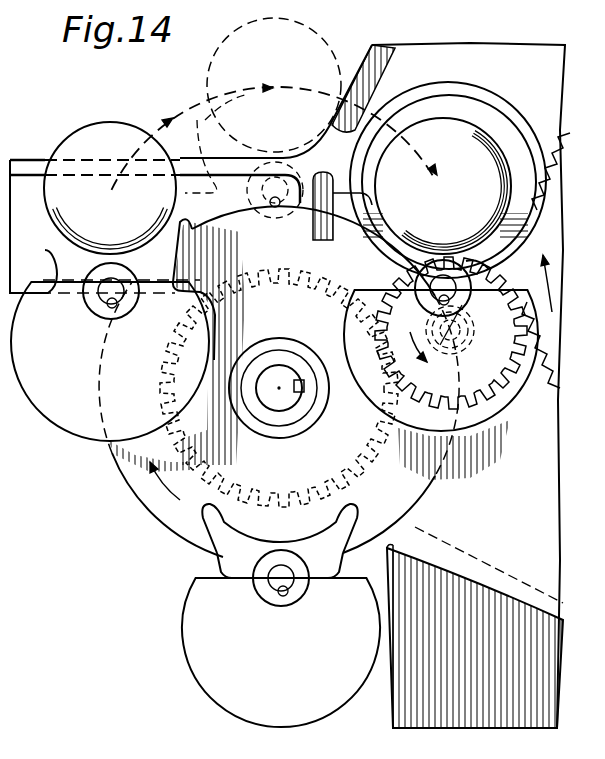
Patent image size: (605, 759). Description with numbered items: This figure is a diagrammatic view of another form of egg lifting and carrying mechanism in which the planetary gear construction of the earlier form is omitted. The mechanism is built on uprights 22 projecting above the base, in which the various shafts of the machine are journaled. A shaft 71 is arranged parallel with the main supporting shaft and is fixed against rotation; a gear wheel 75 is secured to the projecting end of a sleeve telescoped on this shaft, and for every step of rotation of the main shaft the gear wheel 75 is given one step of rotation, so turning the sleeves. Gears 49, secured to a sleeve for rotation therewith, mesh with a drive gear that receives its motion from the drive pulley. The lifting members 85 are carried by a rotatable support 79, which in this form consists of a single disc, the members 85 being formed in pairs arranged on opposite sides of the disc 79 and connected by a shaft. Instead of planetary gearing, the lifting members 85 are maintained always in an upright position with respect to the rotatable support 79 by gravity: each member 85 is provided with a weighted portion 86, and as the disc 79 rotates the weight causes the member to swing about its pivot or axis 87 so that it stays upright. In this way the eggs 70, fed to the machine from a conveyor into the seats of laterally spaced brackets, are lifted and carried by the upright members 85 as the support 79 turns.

The uprights 22 is at (504, 50).
The gears 49 is at (570, 134).
The eggs 70 is at (130, 128).
The shaft 71 is at (279, 392).
The gear wheel 75 is at (284, 507).
The rotatable support 79 is at (440, 487).
The lifting members 85 is at (520, 228).
The weighted portions 86 is at (75, 420).
The pivots or axes 87 is at (110, 293).